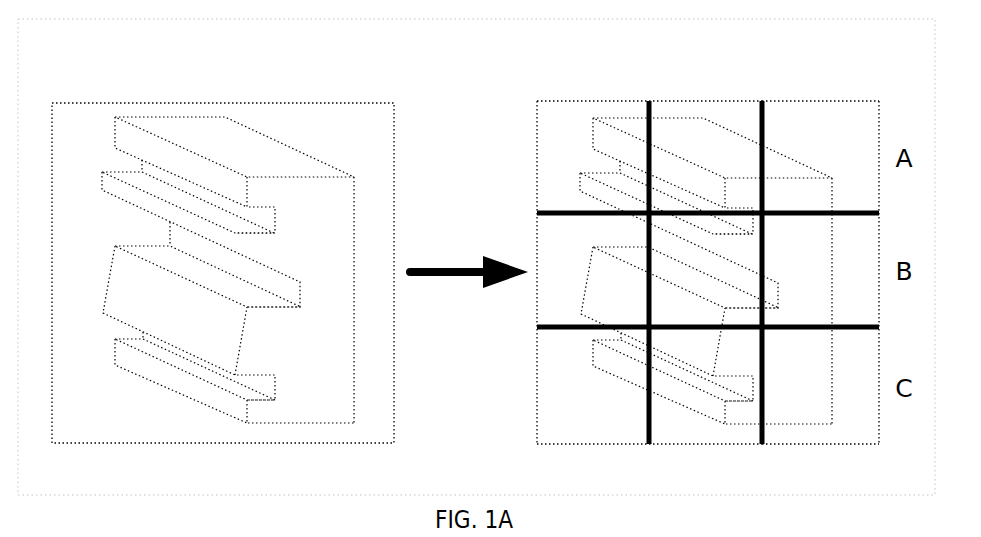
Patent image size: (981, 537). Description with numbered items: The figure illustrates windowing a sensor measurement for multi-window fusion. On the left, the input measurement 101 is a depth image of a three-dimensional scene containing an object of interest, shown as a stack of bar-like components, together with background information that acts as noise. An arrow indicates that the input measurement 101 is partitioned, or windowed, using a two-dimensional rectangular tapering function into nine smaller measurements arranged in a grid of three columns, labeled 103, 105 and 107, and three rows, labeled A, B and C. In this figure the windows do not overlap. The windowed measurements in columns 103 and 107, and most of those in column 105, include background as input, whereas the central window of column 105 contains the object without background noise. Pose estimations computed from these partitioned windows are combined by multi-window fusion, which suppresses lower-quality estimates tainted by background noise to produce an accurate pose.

The input measurement 101 is at (223, 253).
The first column of windowed measurements 103 is at (593, 253).
The second column of windowed measurements 105 is at (705, 253).
The third column of windowed measurements 107 is at (820, 253).